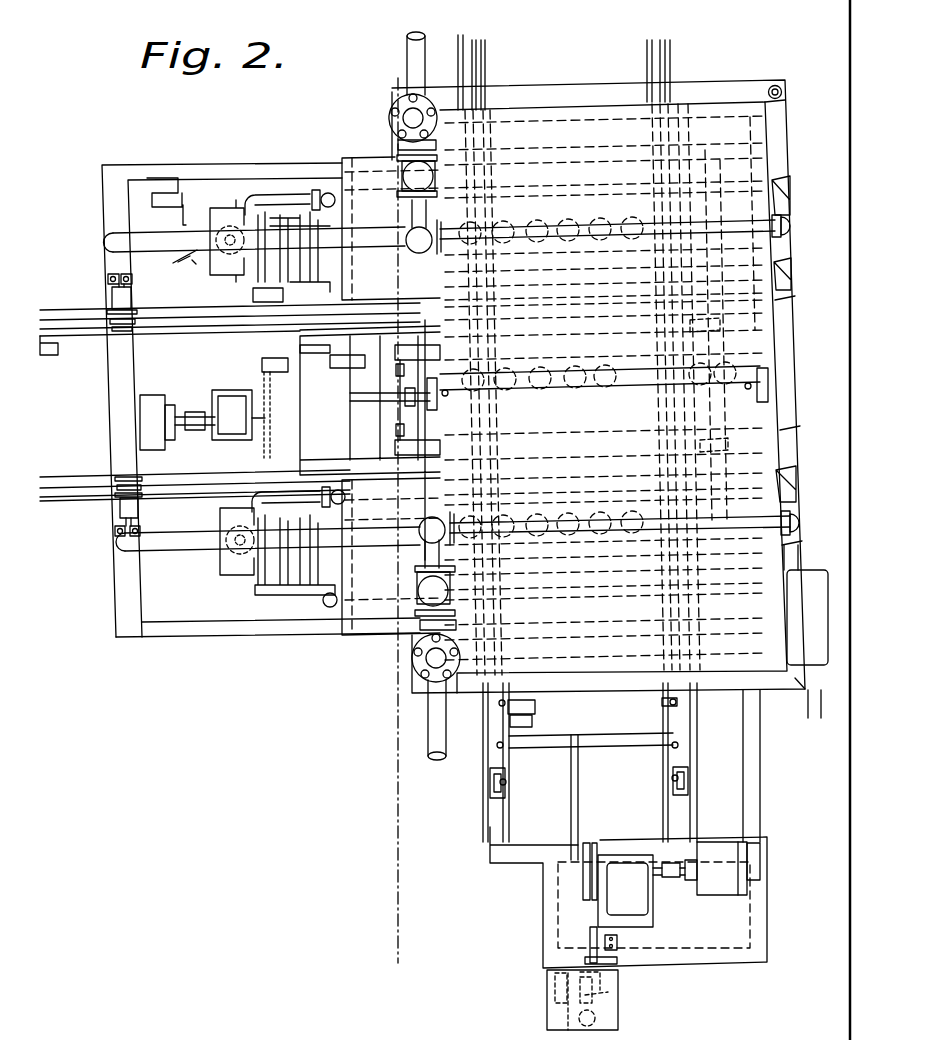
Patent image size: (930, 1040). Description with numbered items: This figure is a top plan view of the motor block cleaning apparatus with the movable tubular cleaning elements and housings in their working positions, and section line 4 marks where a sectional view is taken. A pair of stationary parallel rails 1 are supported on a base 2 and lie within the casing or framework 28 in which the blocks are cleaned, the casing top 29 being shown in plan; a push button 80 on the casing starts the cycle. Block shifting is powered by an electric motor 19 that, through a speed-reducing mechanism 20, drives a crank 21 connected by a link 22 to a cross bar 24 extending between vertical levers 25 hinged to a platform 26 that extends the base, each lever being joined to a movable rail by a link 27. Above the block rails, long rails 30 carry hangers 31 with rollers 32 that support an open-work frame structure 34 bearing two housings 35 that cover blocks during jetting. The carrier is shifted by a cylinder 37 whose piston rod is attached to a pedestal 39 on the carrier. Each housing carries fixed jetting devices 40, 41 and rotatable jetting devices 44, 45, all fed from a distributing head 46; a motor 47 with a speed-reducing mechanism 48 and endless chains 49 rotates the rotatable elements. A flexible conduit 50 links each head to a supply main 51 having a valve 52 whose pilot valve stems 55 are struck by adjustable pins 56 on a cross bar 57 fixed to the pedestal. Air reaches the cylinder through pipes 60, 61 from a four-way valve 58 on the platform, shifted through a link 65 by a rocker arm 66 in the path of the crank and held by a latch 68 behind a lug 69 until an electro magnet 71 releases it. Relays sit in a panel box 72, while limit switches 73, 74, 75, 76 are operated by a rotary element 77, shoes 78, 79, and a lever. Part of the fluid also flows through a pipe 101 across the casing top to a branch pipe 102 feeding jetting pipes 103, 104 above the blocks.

The stationary rails 1 is at (458, 36).
The base 2 is at (548, 84).
The section line 4— 4 is at (392, 74).
The electric motor 19 is at (740, 898).
The speed-reducing mechanism 20 is at (650, 912).
The crank 21 is at (582, 878).
The link 22 is at (571, 802).
The cross bar 24 is at (628, 748).
The vertical levers 25 is at (506, 760).
The platform 26 is at (490, 834).
The link 27 is at (515, 698).
The casing or framework 28 is at (712, 115).
The table surface 29 is at (580, 130).
The rails 30 is at (64, 310).
The hangers 31 is at (112, 298).
The rollers 32 is at (135, 316).
The frame structure 34 is at (102, 196).
The housings 35 is at (352, 158).
The cylinder 37 is at (588, 382).
The pedestal 39 is at (380, 400).
The jetting device 40 is at (282, 192).
The jetting device 41 is at (253, 296).
The rotatable jetting device 44 is at (405, 232).
The rotatable jetting device 45 is at (408, 262).
The distributing head 46 is at (256, 225).
The motor 47 is at (148, 396).
The speed-reducing mechanism 48 is at (225, 395).
The endless chains or belts 49 is at (272, 412).
The flexible conduit 50 is at (112, 240).
The supply main 51 is at (407, 46).
The valve 52 is at (392, 112).
The pilot valve stems 55 is at (416, 348).
The adjustable pins or screws 56 is at (407, 399).
The cross bar 57 is at (404, 384).
The four-way valve 58 is at (548, 1004).
The pipe 60 is at (446, 390).
The pipe 61 is at (748, 382).
The link 65 is at (585, 960).
The rocker arm 66 is at (590, 930).
The latch 68 is at (610, 998).
The lug 69 is at (606, 978).
The electro magnet 71 is at (597, 1017).
The panel box 72 is at (814, 690).
The limit switch 73 is at (163, 178).
The limit switch 74 is at (55, 356).
The limit switch 75 is at (345, 368).
The limit switch 76 is at (533, 718).
The rotary element 77 is at (178, 258).
The shoe 78 is at (272, 366).
The shoe 79 is at (338, 372).
The push button 80 is at (776, 85).
The pipe 101 is at (560, 236).
The branch pipe 102 is at (792, 238).
The jetting pipe 103 is at (788, 288).
The jetting pipe 104 is at (788, 190).